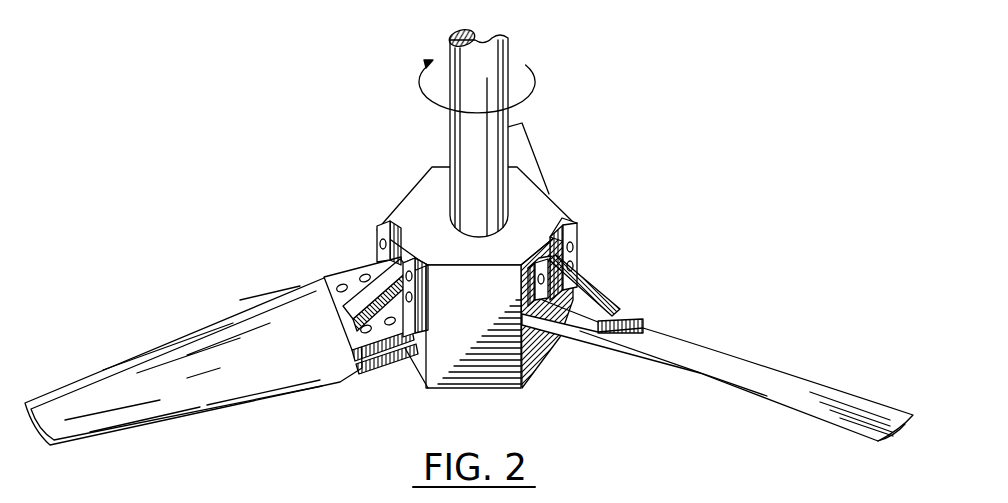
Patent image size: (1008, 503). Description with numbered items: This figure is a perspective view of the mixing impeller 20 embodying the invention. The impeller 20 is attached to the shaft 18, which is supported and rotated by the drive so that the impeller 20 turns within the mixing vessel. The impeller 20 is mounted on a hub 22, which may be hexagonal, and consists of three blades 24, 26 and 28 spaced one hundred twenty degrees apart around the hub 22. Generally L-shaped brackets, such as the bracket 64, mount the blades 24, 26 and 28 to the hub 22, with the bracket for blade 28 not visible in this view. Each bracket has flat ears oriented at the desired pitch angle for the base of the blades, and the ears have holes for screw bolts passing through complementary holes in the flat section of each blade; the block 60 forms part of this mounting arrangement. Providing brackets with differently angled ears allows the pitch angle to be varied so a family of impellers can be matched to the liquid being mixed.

The shaft 18 is at (508, 50).
The mixing impeller 20 is at (622, 282).
The hub 22 is at (497, 378).
The blade 24 is at (737, 365).
The blade 26 is at (283, 403).
The blade 28 is at (535, 148).
The mounting block 60 is at (377, 245).
The bracket 64 is at (580, 243).